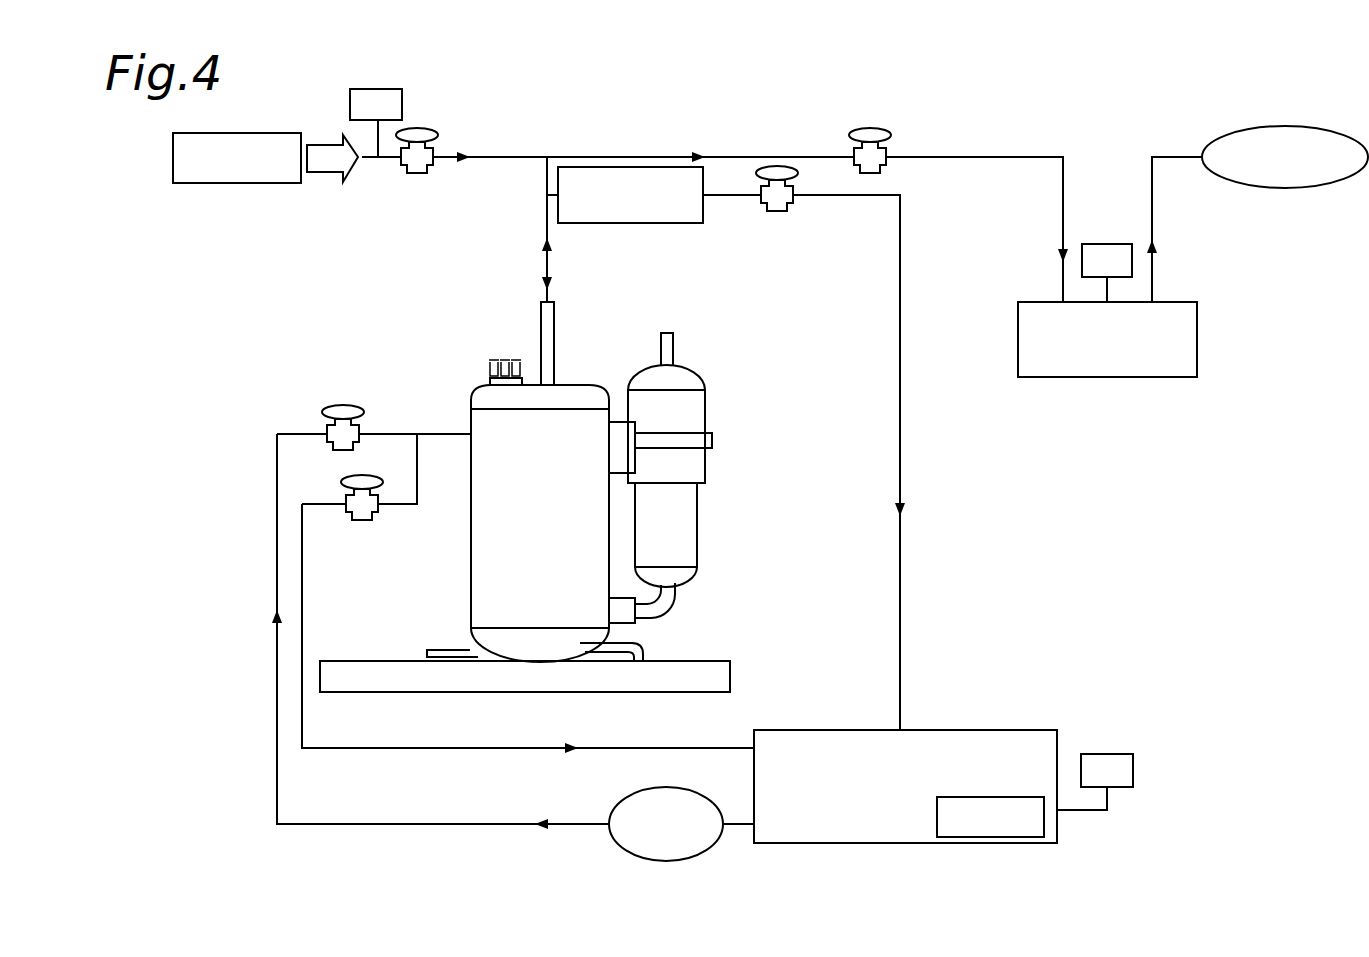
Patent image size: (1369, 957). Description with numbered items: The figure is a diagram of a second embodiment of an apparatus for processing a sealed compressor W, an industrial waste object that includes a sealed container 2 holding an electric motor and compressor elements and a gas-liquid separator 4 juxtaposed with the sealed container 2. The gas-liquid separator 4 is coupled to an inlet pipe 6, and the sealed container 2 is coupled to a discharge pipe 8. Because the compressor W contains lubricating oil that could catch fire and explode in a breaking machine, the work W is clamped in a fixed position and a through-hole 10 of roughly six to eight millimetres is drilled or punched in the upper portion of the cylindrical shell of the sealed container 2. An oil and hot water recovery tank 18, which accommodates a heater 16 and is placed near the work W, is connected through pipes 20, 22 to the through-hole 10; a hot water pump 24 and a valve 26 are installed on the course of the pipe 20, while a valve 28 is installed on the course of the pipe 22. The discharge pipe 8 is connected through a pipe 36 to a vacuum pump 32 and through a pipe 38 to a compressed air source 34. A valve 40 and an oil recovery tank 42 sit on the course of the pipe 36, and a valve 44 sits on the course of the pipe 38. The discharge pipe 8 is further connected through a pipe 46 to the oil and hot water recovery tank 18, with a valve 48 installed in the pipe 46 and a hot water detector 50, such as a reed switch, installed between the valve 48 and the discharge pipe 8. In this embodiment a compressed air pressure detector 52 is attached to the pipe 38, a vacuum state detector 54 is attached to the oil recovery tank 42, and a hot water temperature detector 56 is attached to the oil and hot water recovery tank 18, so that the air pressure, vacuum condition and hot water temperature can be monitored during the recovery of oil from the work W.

The sealed container 2 is at (483, 587).
The gas-liquid separator 4 is at (684, 528).
The inlet pipe 6 is at (675, 343).
The discharge pipe 8 is at (555, 320).
The through-hole 10 is at (471, 438).
The heater 16 is at (985, 797).
The oil and hot water recovery tank 18 is at (803, 730).
The pipe 20 is at (385, 824).
The pipe 22 is at (385, 748).
The hot water pump 24 is at (650, 787).
The valve 26 is at (343, 405).
The valve 28 is at (360, 475).
The vacuum pump 32 is at (1283, 189).
The compressed air source 34 is at (233, 133).
The pipe 36 is at (985, 157).
The pipe 38 is at (518, 157).
The valve 40 is at (870, 129).
The oil recovery tank 42 is at (1084, 378).
The valve 44 is at (428, 128).
The pipe 46 is at (900, 372).
The valve 48 is at (776, 211).
The hot water detector 50 is at (625, 224).
The compressed air pressure detector 52 is at (369, 89).
The vacuum state detector 54 is at (1107, 244).
The hot water temperature detector 56 is at (1100, 754).
The sealed compressor (work) W is at (702, 468).